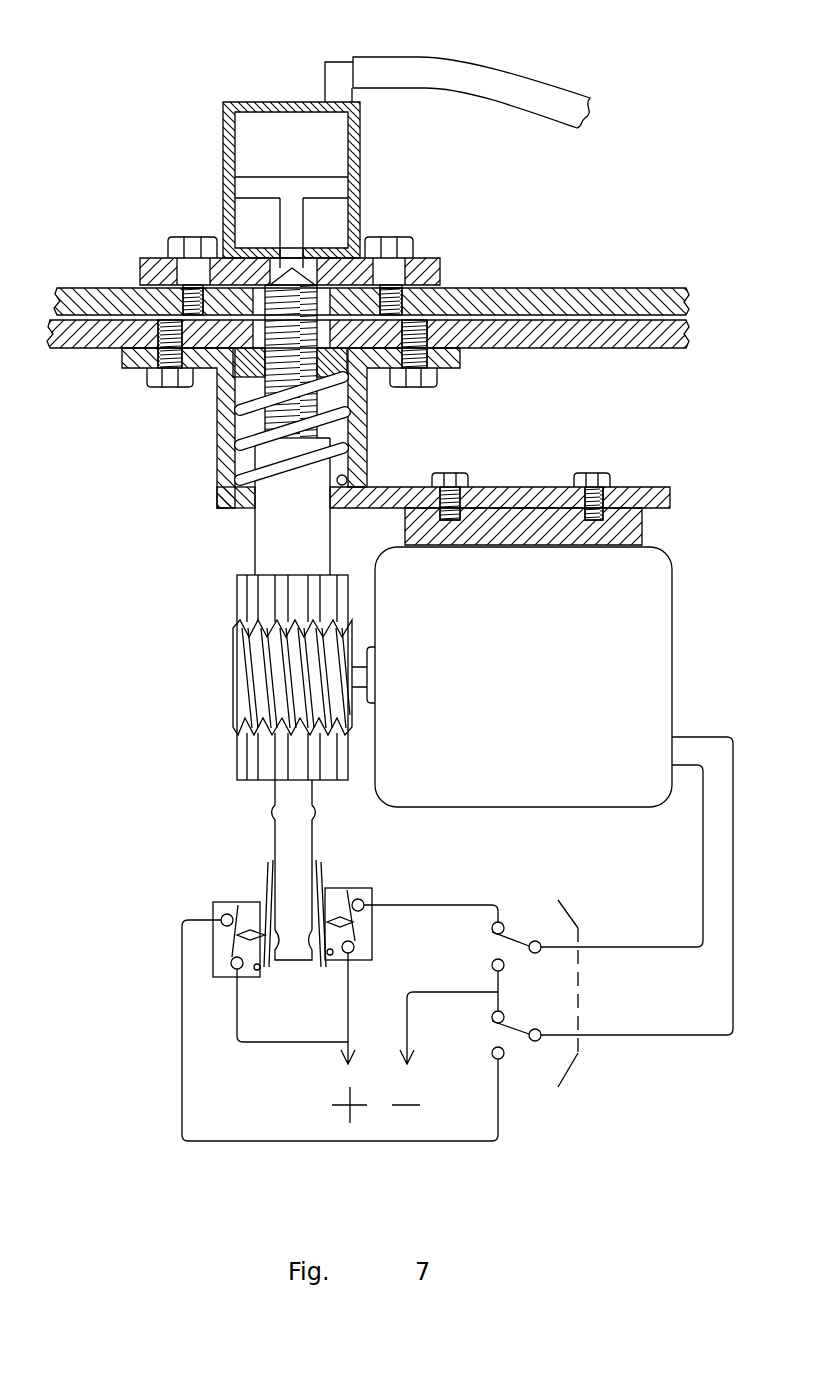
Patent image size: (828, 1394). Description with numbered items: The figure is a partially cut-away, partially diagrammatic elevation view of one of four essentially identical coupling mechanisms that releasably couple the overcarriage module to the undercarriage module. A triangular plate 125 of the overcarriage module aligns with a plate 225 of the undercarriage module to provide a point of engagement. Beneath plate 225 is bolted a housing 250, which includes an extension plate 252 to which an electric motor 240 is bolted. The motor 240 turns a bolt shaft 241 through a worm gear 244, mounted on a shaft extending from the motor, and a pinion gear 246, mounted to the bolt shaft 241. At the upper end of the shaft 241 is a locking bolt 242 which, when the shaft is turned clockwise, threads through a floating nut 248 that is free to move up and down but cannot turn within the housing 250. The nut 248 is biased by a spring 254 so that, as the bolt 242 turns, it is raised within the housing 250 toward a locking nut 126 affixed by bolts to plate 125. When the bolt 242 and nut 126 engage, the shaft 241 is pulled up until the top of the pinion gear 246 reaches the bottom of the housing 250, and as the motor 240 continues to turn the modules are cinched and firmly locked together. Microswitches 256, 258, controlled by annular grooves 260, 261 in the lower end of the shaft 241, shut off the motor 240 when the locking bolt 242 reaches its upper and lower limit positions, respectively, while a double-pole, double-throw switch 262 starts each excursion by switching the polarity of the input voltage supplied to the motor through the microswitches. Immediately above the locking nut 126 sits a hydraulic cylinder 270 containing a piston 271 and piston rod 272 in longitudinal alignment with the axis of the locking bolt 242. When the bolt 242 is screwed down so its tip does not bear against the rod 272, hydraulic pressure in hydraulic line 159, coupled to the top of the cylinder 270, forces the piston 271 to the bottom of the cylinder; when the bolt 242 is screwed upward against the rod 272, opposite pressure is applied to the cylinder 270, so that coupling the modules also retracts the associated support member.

The hydraulic line 159 is at (473, 60).
The hydraulic cylinder 270 is at (223, 112).
The piston 271 is at (270, 185).
The piston rod 272 is at (287, 220).
The locking nut 126 is at (152, 257).
The triangular plate 125 is at (632, 287).
The plate 225 is at (623, 348).
The housing 250 is at (365, 440).
The floating nut 248 is at (242, 367).
The spring 254 is at (222, 493).
The extension plate 252 is at (627, 487).
The bolt shaft 241 is at (257, 540).
The locking bolt 242 is at (226, 437).
The electric motor 240 is at (652, 610).
The pinion gear 246 is at (237, 753).
The worm gear 244 is at (232, 677).
The annular groove 260 is at (272, 813).
The annular groove 261 is at (283, 937).
The microswitch 256 is at (238, 907).
The microswitch 258 is at (337, 887).
The double-pole, double-throw switch 262 is at (542, 903).